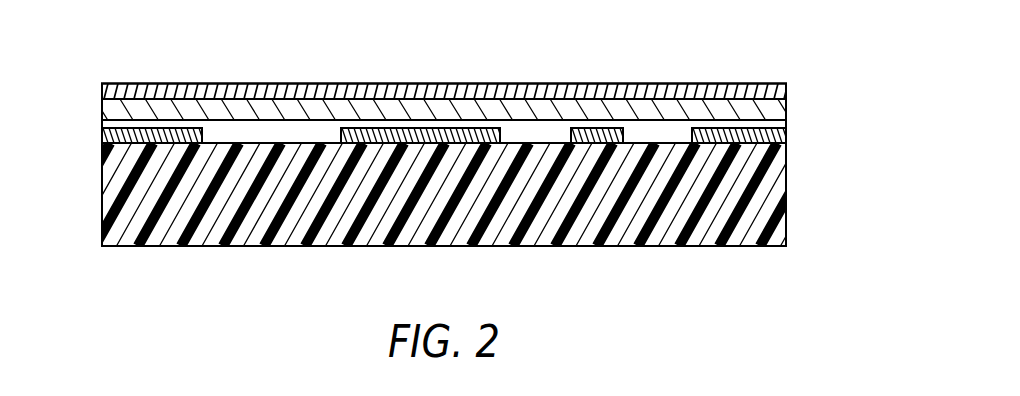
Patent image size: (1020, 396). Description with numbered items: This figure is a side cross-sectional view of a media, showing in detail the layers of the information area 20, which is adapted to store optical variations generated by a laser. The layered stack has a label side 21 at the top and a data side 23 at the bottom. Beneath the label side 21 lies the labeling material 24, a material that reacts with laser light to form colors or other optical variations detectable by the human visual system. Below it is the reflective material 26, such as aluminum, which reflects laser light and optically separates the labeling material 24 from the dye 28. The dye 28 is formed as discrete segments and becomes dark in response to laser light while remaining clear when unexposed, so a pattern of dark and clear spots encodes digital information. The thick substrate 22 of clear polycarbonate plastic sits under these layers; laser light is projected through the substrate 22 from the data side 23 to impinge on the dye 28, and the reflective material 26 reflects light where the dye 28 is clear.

The information area 20 is at (90, 82).
The label side 21 is at (672, 84).
The substrate 22 is at (118, 181).
The data side 23 is at (240, 245).
The labeling material 24 is at (788, 89).
The reflective material 26 is at (788, 110).
The dye 28 is at (788, 133).